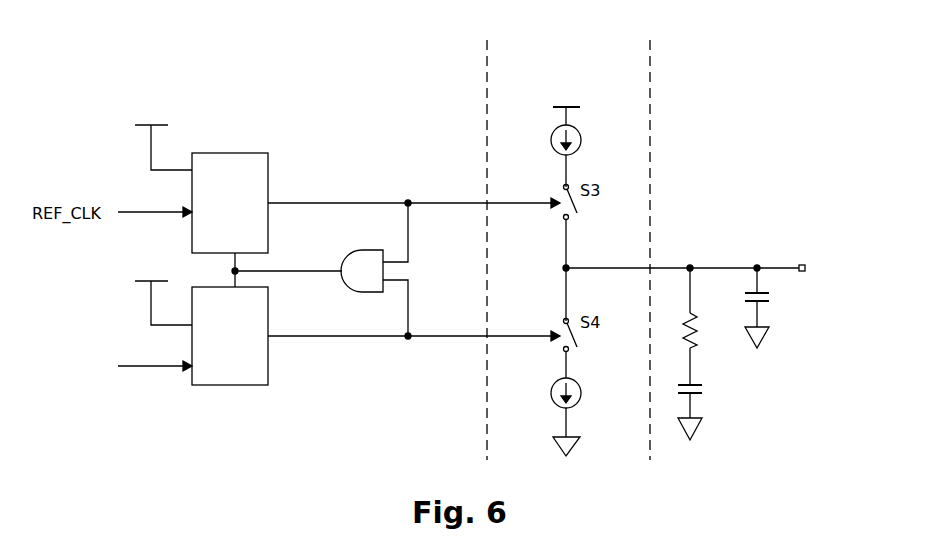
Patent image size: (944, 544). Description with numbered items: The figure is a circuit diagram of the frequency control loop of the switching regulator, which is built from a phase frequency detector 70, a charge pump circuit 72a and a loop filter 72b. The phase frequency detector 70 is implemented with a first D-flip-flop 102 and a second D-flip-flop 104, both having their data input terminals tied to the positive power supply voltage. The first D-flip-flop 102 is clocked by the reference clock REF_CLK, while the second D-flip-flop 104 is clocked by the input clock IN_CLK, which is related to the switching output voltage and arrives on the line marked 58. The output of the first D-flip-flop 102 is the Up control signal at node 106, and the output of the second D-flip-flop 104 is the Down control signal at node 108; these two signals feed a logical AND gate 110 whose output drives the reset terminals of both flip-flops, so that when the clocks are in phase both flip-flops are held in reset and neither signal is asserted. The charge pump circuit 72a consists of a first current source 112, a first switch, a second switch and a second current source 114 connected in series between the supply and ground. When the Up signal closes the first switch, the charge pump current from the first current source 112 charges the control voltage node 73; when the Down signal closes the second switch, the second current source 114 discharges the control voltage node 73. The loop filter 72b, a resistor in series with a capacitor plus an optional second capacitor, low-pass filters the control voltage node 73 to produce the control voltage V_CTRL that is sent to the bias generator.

The phase frequency detector 70 is at (315, 69).
The charge pump circuit 72a is at (552, 67).
The loop filter 72b is at (714, 91).
The first D-flip-flop 102 is at (232, 131).
The second D-flip-flop 104 is at (236, 385).
The Up control signal node 106 is at (340, 201).
The Down control signal node 108 is at (340, 338).
The logical AND gate 110 is at (369, 292).
The first current source 112 is at (310, 269).
The second current source 114 is at (551, 393).
The control voltage node 73 is at (611, 267).
The input clock signal IN_CLK 58 is at (140, 367).